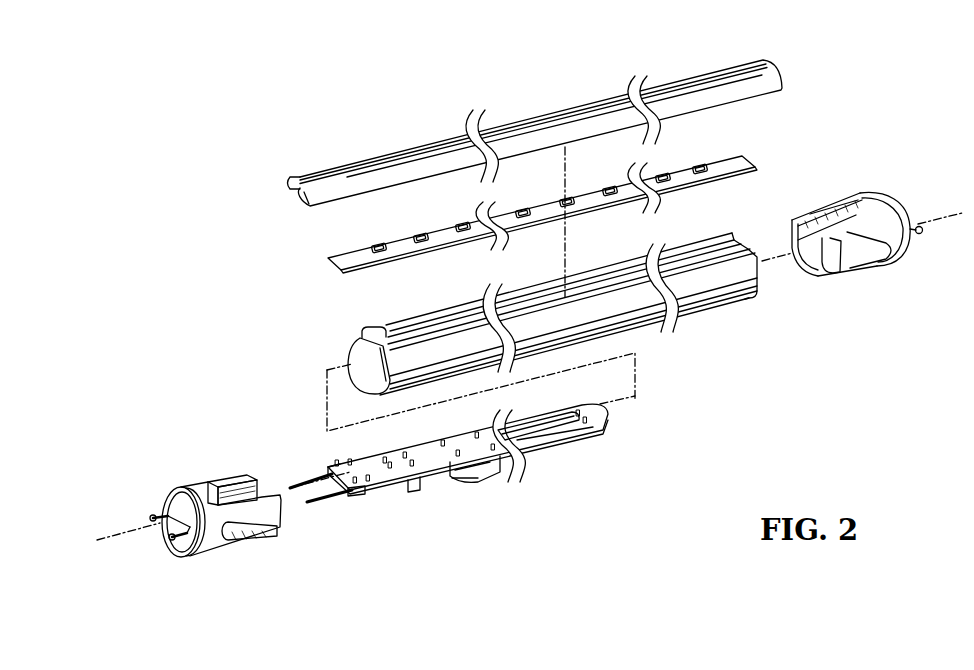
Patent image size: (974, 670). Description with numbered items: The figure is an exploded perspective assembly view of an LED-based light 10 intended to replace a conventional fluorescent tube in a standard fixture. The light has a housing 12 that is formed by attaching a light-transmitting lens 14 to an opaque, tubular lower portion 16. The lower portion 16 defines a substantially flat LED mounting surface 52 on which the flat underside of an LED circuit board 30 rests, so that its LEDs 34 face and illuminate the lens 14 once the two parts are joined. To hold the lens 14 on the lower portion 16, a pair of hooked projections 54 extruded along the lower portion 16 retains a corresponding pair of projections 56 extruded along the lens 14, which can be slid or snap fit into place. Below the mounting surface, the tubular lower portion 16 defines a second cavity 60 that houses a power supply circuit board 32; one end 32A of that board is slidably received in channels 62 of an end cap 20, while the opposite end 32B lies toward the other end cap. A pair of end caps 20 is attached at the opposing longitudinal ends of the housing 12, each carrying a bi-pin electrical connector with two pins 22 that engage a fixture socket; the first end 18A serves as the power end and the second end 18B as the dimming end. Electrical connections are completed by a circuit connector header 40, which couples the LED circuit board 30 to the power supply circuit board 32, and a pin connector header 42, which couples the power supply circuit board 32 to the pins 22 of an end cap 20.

The LED-based light 10 is at (207, 178).
The housing 12 is at (266, 214).
The lens 14 is at (509, 151).
The lower portion 16 is at (514, 332).
The first end 18A is at (189, 503).
The second end 18B is at (903, 203).
The end cap 20 is at (238, 551).
The pins 22 is at (150, 518).
The LED circuit board 30 is at (542, 214).
The power supply circuit board 32 is at (459, 474).
The end of the power supply circuit board 32A is at (332, 466).
The second end of circuit board 32B is at (593, 437).
The LEDs 34 is at (380, 246).
The circuit connector header 40 is at (394, 489).
The pin connector header 42 is at (358, 498).
The LED mounting surface 52 is at (451, 320).
The hooked projections 54 is at (366, 333).
The projections 56 is at (310, 208).
The second cavity 60 is at (352, 358).
The channels 62 is at (250, 483).